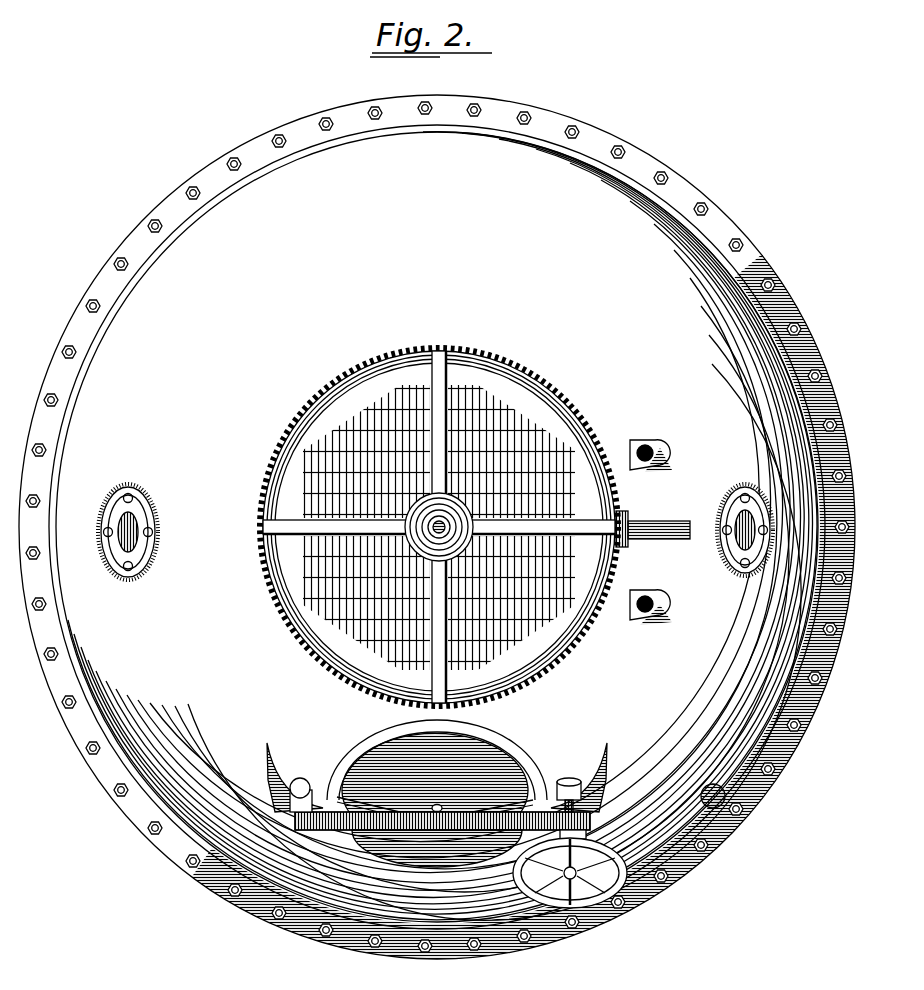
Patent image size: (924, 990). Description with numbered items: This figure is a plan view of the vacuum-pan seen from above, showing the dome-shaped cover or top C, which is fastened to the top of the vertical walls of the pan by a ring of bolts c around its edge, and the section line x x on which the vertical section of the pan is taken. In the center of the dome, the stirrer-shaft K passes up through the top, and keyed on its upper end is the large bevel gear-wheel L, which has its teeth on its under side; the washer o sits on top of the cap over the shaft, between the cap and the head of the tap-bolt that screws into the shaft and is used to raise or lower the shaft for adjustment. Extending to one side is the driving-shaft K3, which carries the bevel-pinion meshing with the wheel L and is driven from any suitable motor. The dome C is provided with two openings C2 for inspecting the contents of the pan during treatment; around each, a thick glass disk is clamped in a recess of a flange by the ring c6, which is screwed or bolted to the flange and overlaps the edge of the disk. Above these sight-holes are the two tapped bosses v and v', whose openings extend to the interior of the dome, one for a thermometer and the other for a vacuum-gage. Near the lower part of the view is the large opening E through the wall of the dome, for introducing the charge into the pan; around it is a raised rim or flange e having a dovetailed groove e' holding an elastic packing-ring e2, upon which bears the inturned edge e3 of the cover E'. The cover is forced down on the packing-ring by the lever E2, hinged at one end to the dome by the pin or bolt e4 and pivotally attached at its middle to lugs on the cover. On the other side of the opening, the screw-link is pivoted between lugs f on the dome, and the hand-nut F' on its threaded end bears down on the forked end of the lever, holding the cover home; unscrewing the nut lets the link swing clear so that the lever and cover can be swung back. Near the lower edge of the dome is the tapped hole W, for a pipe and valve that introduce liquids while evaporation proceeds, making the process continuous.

The bolts c is at (374, 108).
The dome-shaped cover C is at (437, 527).
The openings C2 is at (435, 520).
The ring c6 is at (432, 541).
The stirrer-shaft K is at (458, 516).
The washer o is at (447, 526).
The bevel gear-wheel L is at (439, 527).
The driving-shaft K3 is at (650, 541).
The tapped boss v' is at (652, 450).
The tapped boss v is at (655, 607).
The section line x is at (858, 530).
The cover E' is at (437, 766).
The raised rim or flange e is at (435, 810).
The lever E2 is at (300, 833).
The inturned edge e3 is at (296, 763).
The packing-ring e2 is at (293, 797).
The lugs f is at (588, 773).
The opening E is at (580, 800).
The dovetailed groove e' is at (585, 833).
The pin or bolt e4 is at (437, 848).
The hand-nut F' is at (573, 872).
The tapped hole W is at (760, 798).